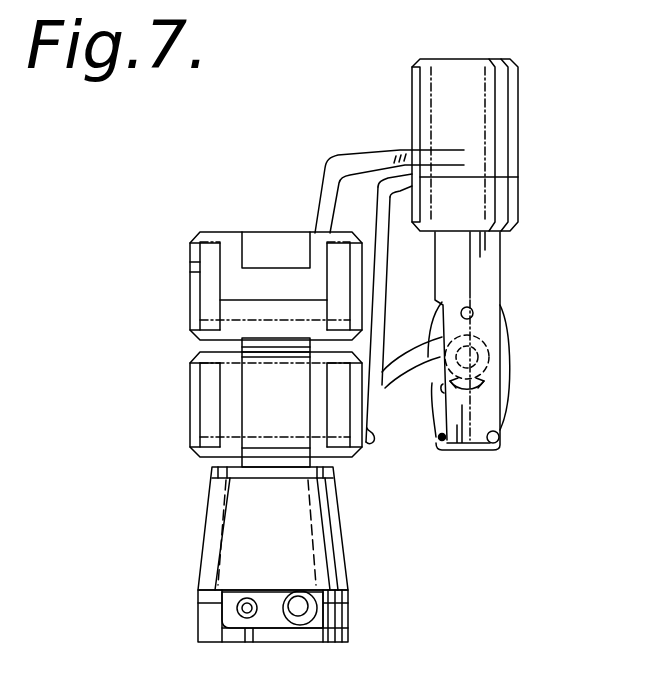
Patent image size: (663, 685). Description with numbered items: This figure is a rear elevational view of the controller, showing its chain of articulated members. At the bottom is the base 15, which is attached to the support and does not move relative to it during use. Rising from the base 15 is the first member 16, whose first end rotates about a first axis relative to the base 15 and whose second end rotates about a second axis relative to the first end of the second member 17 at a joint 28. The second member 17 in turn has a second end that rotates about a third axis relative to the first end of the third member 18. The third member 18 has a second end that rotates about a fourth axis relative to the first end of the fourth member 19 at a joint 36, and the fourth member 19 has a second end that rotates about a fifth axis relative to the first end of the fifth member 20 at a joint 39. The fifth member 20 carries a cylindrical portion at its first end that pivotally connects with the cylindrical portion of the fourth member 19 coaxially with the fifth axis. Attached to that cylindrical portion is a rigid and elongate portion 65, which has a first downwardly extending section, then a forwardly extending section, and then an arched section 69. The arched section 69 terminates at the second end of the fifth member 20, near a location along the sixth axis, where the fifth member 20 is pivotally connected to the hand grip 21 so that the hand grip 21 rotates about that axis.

The base 15 is at (198, 628).
The first member 16 is at (205, 530).
The second member 17 is at (260, 427).
The third member 18 is at (262, 232).
The fourth member 19 is at (374, 150).
The fifth member 20 is at (367, 428).
The hand grip 21 is at (503, 262).
The joint 28 is at (190, 411).
The joint 36 is at (190, 283).
The joint 39 is at (463, 59).
The rigid and elongate portion 65 is at (389, 233).
The arched section 69 is at (413, 373).